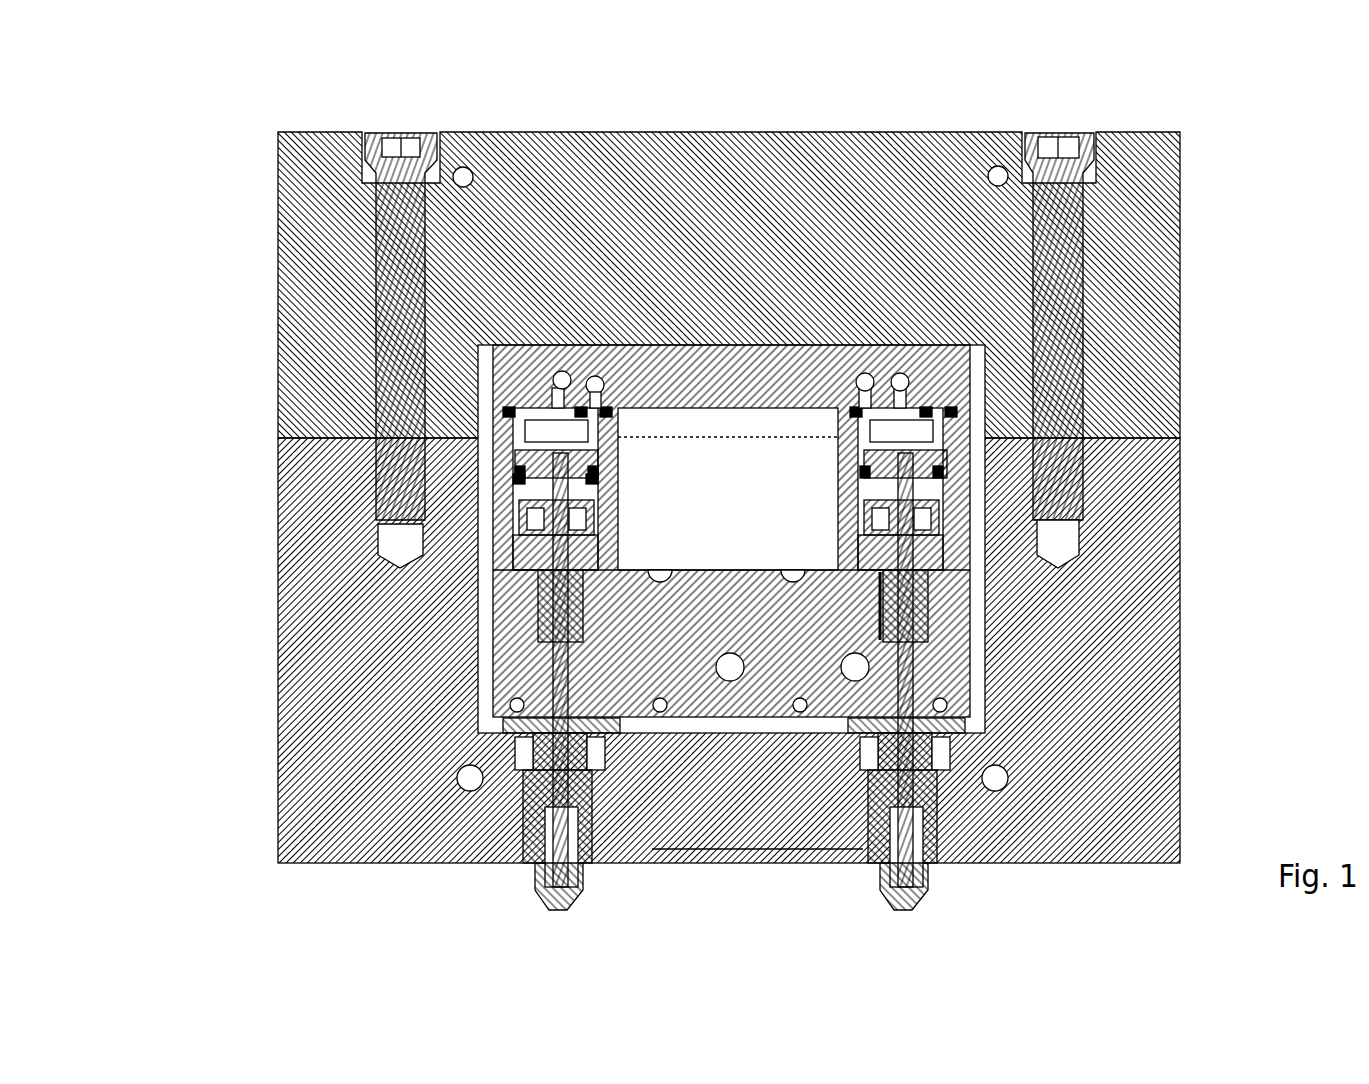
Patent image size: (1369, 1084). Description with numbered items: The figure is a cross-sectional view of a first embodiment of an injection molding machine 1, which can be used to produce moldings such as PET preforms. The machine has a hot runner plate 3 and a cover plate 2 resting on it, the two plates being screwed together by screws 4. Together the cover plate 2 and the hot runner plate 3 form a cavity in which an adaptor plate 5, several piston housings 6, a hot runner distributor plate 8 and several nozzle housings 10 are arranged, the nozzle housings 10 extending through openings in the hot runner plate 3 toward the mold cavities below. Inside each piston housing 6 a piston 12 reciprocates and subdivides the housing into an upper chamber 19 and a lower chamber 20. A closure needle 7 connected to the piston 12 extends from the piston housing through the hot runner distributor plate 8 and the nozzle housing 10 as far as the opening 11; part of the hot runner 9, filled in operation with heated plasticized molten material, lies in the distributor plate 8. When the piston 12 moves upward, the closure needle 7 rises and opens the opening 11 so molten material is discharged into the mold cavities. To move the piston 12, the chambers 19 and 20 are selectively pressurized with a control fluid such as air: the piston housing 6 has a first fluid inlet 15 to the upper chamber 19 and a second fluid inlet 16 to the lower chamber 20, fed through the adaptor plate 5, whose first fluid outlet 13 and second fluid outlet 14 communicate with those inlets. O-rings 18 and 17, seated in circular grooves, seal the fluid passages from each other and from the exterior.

The injection molding machine 1 is at (140, 620).
The cover plate 2 is at (315, 272).
The hot runner plate 3 is at (325, 706).
The screws 4 is at (433, 135).
The adaptor plate 5 is at (740, 378).
The piston housing 6 is at (612, 475).
The closure needle 7 is at (558, 553).
The hot runner distributor plate 8 is at (722, 578).
The hot runner 9 is at (552, 702).
The nozzle housing 10 is at (575, 782).
The opening 11 is at (575, 907).
The piston 12 is at (535, 479).
The first fluid outlet 13 is at (562, 372).
The second fluid outlet 14 is at (595, 378).
The first fluid inlet 15 is at (557, 407).
The second fluid inlet 16 is at (602, 405).
The O-ring 17 is at (530, 410).
The O-ring 18 is at (505, 413).
The upper chamber 19 is at (550, 453).
The lower chamber 20 is at (523, 500).